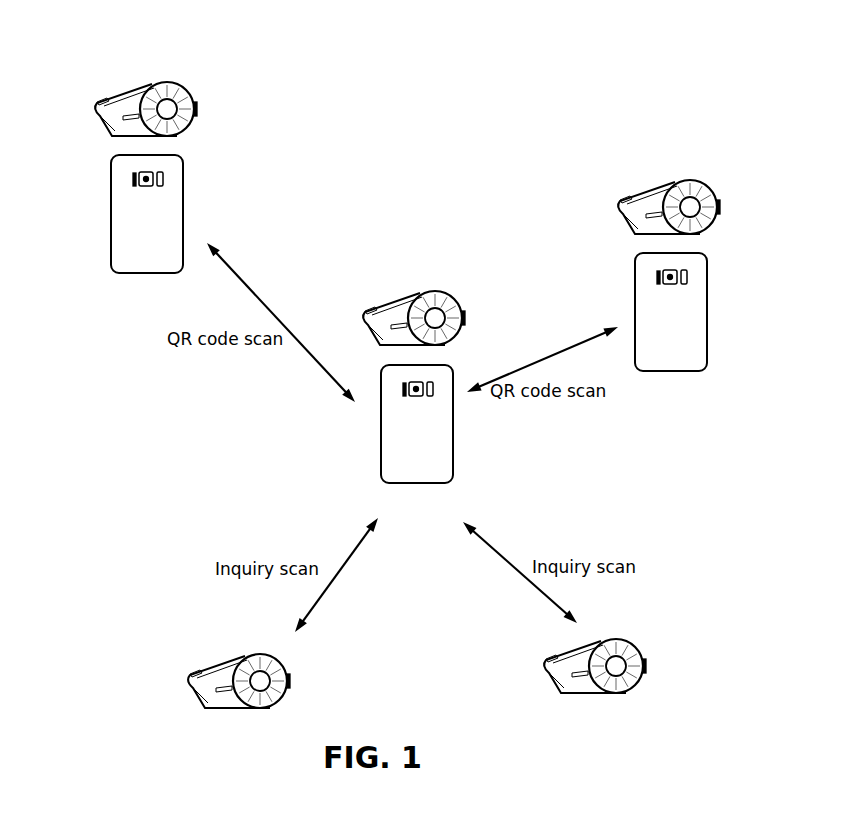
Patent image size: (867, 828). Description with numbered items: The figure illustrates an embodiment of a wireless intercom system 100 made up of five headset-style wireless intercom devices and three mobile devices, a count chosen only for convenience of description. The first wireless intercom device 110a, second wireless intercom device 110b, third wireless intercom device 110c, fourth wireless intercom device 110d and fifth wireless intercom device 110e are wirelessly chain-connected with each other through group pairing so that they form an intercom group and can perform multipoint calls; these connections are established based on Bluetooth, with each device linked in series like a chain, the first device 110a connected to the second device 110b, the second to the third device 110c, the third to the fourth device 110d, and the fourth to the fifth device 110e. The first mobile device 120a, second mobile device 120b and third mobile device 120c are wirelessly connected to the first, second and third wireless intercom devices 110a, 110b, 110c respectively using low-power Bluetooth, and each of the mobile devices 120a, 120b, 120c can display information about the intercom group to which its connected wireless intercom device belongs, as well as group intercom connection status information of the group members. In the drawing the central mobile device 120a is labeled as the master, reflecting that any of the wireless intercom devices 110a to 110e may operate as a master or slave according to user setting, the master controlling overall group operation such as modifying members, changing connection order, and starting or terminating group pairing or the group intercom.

The wireless intercom system 100 is at (463, 76).
The first wireless intercom device 110a is at (378, 307).
The second wireless intercom device 110b is at (111, 99).
The third wireless intercom device 110c is at (633, 196).
The fourth wireless intercom device 110d is at (205, 670).
The fifth wireless intercom device 110e is at (559, 655).
The first mobile device 120a is at (453, 450).
The second mobile device 120b is at (183, 202).
The third mobile device 120c is at (707, 318).